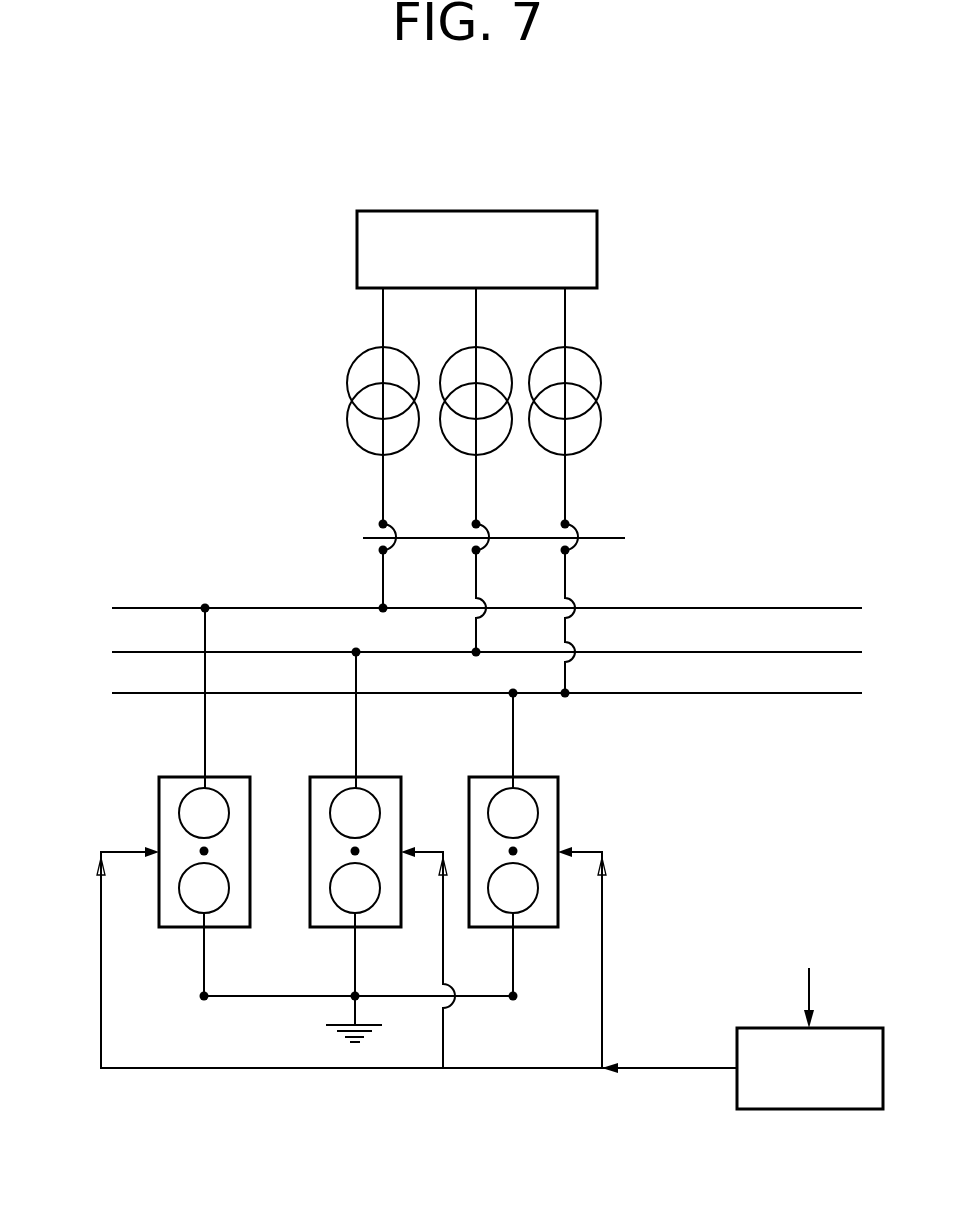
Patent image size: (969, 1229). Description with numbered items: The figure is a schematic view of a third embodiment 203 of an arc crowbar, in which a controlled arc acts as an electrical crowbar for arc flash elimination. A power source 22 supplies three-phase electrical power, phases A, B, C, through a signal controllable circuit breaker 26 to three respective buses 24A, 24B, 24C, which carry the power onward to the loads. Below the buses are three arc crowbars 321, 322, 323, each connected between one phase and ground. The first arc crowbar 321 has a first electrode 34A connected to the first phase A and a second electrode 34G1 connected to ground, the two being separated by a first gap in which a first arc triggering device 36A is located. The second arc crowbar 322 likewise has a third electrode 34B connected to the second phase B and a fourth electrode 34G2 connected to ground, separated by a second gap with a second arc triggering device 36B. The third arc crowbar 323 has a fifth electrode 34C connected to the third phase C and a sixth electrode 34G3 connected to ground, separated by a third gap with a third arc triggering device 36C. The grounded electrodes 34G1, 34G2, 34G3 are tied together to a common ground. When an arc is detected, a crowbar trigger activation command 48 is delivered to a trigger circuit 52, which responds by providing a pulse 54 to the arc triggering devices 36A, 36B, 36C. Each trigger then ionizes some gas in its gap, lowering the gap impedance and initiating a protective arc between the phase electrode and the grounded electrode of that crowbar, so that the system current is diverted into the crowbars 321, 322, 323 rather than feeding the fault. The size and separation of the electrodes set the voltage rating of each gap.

The third embodiment 203 is at (212, 350).
The power source 22 is at (597, 248).
The first phase A is at (383, 313).
The second phase B is at (476, 313).
The third phase C is at (565, 313).
The signal controllable circuit breaker 26 is at (372, 537).
The bus 24A is at (135, 608).
The bus 24B is at (135, 652).
The bus 24C is at (135, 693).
The first electrode 34A is at (135, 802).
The third electrode 34B is at (380, 824).
The fifth electrode 34C is at (539, 844).
The first arc triggering device 36A is at (200, 851).
The second arc triggering device 36B is at (360, 850).
The third arc triggering device 36C is at (518, 850).
The second electrode 34G1 is at (183, 897).
The fourth electrode 34G2 is at (367, 910).
The sixth electrode 34G3 is at (525, 910).
The first arc crowbar 321 is at (177, 928).
The second arc crowbar 322 is at (328, 925).
The third arc crowbar 323 is at (496, 925).
The pulse 54 is at (101, 958).
The trigger circuit 52 is at (768, 1028).
The crowbar trigger activation command 48 is at (809, 990).